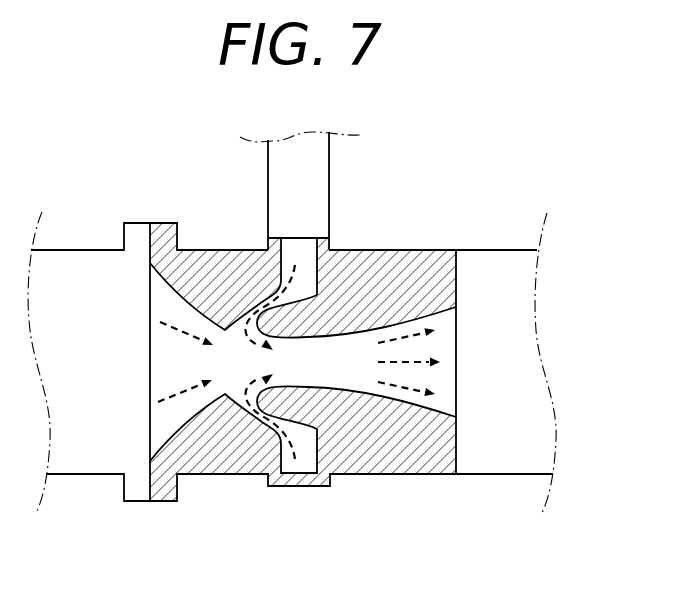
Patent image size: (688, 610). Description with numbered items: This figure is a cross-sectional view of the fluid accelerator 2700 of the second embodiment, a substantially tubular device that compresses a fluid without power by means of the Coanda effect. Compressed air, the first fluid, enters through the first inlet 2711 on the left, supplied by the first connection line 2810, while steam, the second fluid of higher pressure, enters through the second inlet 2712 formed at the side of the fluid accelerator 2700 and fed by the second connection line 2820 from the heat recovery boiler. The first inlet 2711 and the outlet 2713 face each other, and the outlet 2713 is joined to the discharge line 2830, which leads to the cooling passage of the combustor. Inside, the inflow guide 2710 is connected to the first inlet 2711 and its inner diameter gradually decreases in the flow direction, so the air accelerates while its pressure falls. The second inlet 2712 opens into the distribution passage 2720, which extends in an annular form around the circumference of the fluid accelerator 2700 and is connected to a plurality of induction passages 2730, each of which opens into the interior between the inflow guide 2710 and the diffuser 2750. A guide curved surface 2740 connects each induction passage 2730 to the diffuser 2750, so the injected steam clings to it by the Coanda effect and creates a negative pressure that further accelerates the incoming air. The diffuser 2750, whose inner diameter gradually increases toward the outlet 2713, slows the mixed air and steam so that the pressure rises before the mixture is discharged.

The fluid accelerator 2700 is at (434, 230).
The inflow guide 2710 is at (177, 410).
The first inlet 2711 is at (150, 383).
The second inlet 2712 is at (299, 238).
The outlet 2713 is at (458, 363).
The distribution passage 2720 is at (308, 275).
The induction passage 2730 is at (256, 402).
The guide curved surface 2740 is at (257, 373).
The diffuser 2750 is at (346, 323).
The first connection line 2810 is at (82, 267).
The second connection line 2820 is at (278, 173).
The discharge line 2830 is at (498, 262).